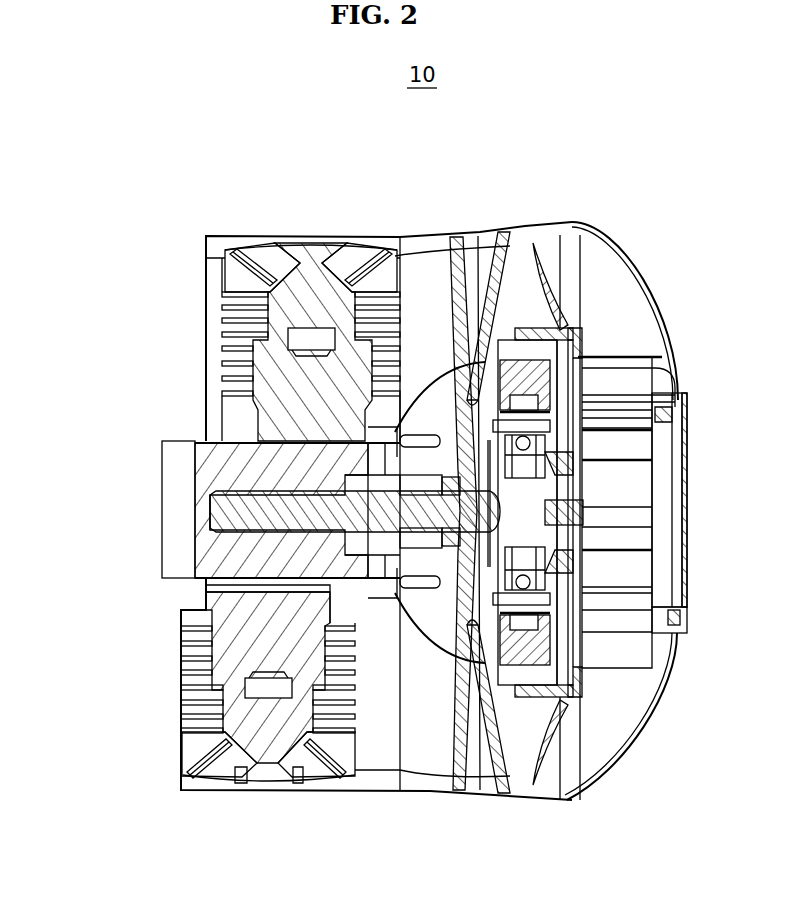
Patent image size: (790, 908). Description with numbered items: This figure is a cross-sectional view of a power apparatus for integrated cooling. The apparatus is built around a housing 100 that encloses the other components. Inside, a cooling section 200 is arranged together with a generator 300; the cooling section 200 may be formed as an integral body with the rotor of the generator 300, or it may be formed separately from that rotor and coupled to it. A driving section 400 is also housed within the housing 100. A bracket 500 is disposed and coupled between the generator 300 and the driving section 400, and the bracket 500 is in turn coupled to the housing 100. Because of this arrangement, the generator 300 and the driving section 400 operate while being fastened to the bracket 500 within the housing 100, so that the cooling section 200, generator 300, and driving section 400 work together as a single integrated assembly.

The housing 100 is at (330, 790).
The cooling section 200 is at (640, 650).
The generator 300 is at (560, 799).
The driving section 400 is at (225, 656).
The bracket 500 is at (423, 793).